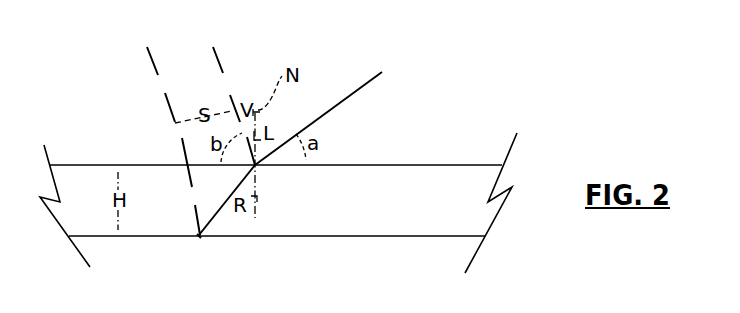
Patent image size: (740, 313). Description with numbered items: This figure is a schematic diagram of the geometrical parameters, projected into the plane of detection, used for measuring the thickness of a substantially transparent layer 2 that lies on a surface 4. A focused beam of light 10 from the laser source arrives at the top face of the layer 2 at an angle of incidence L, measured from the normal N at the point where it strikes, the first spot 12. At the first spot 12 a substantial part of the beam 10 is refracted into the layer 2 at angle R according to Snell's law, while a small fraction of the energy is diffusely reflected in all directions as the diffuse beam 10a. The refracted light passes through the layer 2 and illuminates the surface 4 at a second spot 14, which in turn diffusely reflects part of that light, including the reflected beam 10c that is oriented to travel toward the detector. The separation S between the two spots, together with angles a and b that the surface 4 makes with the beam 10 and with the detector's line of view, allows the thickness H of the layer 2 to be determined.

The transparent layer 2 is at (370, 200).
The surface 4 is at (390, 228).
The focused beam of light 10 is at (336, 108).
The diffuse beam 10a is at (231, 95).
The reflected beam 10c is at (153, 64).
The first spot 12 is at (258, 167).
The second spot 14 is at (200, 237).